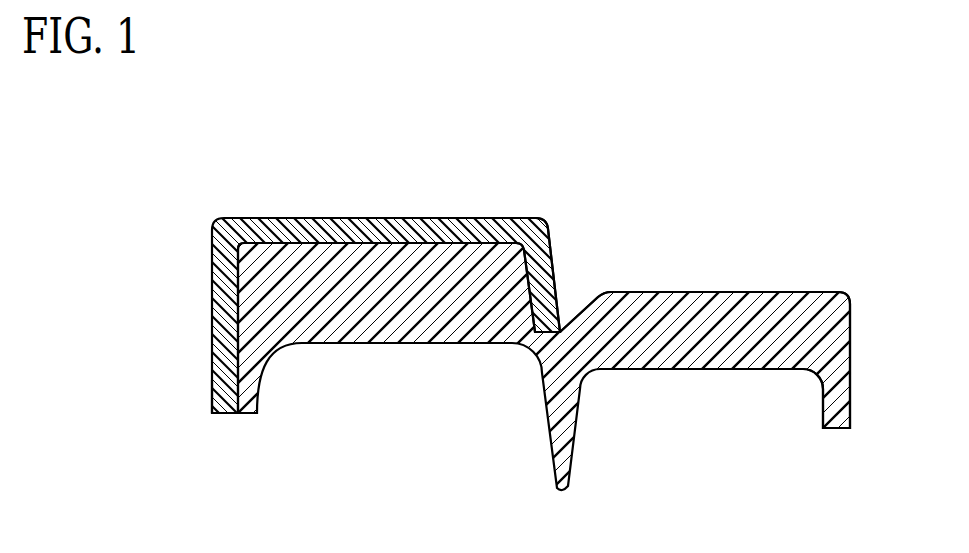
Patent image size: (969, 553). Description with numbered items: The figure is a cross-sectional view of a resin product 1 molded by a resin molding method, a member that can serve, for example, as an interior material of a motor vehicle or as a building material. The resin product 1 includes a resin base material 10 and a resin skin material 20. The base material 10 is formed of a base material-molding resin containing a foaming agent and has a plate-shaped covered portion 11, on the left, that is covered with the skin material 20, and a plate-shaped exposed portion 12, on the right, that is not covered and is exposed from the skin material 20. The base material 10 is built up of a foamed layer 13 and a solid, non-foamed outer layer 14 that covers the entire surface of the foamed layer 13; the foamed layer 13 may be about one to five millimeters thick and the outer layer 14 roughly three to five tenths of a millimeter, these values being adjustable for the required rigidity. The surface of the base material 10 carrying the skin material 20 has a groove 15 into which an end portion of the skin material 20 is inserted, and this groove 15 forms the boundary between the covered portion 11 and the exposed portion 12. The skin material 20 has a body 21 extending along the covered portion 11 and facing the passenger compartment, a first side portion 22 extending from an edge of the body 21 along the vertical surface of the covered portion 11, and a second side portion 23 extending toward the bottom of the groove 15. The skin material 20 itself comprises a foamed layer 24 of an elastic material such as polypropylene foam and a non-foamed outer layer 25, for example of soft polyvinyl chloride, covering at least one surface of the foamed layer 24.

The resin product 1 is at (113, 258).
The base material 10 is at (265, 318).
The covered portion 11 is at (440, 258).
The exposed portion 12 is at (757, 317).
The foamed layer 13 is at (692, 370).
The outer layer 14 is at (848, 300).
The groove 15 is at (570, 312).
The skin material 20 is at (230, 283).
The body 21 is at (282, 218).
The first side portion 22 is at (208, 393).
The second side portion 23 is at (552, 255).
The foamed layer 24 is at (365, 225).
The outer layer 25 is at (407, 218).